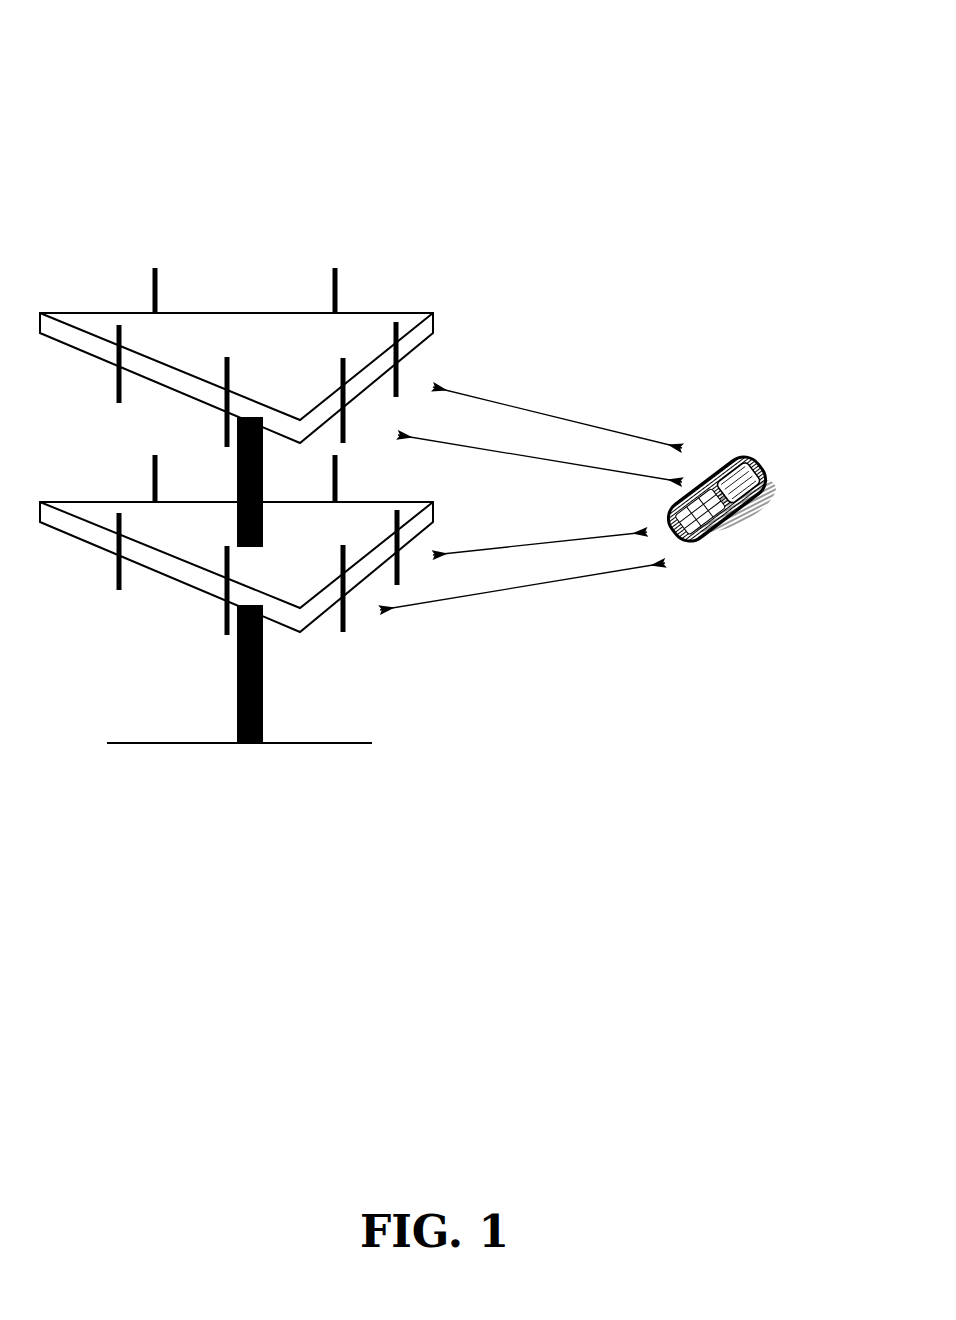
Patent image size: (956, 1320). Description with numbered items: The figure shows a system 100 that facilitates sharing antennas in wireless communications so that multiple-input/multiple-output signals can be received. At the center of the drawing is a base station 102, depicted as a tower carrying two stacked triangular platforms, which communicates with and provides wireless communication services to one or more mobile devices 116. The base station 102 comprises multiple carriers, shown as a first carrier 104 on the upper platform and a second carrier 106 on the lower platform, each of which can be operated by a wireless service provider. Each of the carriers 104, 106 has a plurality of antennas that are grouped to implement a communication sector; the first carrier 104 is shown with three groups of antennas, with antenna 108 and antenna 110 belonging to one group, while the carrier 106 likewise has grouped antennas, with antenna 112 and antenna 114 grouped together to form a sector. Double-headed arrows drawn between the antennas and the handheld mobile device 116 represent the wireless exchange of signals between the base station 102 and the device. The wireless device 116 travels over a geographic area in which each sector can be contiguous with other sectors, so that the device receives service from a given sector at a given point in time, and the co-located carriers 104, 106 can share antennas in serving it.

The system 100 is at (765, 49).
The base station 102 is at (262, 677).
The first carrier 104 is at (110, 313).
The carrier 106 is at (110, 502).
The antenna 108 is at (398, 398).
The antenna 110 is at (345, 443).
The antenna 112 is at (412, 501).
The antenna 114 is at (345, 632).
The mobile device 116 is at (745, 462).